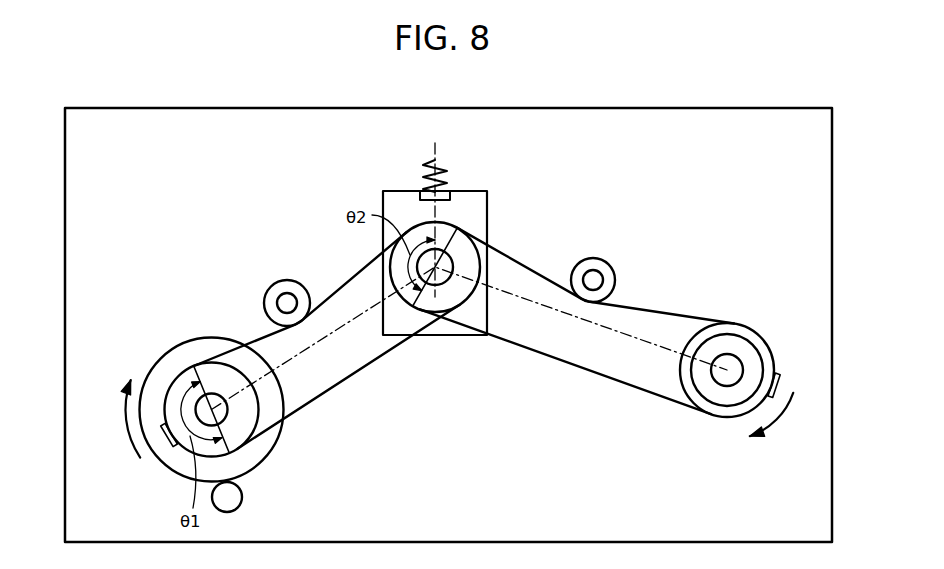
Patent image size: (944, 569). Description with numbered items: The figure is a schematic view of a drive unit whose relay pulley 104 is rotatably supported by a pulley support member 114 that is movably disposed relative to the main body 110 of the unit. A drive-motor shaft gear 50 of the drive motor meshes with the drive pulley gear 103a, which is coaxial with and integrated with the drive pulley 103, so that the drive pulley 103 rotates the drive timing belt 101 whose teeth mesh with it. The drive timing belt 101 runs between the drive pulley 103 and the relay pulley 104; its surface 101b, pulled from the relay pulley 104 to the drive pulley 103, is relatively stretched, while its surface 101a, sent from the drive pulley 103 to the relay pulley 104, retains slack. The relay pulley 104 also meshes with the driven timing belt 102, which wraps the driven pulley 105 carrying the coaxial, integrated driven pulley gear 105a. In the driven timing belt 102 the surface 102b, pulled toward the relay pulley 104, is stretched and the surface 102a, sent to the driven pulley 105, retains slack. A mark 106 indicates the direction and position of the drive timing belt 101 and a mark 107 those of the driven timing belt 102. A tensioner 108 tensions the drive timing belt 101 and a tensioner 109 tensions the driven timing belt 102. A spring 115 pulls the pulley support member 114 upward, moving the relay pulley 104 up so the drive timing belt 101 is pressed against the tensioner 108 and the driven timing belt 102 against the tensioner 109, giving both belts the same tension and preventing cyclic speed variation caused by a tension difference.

The drive-motor shaft gear 50 is at (243, 496).
The drive timing belt 101 is at (327, 341).
The surface of the drive timing belt 101a is at (346, 282).
The surface of the drive timing belt 101b is at (348, 380).
The driven timing belt 102 is at (577, 324).
The surface of the driven timing belt 102a is at (528, 264).
The surface of the driven timing belt 102b is at (566, 364).
The drive pulley 103 is at (182, 380).
The drive pulley gear 103a is at (198, 338).
The relay pulley 104 is at (448, 300).
The driven pulley 105 is at (733, 333).
The driven pulley gear 105a is at (756, 341).
The mark 106 is at (163, 440).
The mark 107 is at (776, 374).
The tensioner 108 is at (282, 280).
The tensioner 109 is at (596, 258).
The main body 110 is at (764, 108).
The pulley support member 114 is at (466, 191).
The spring 115 is at (438, 160).